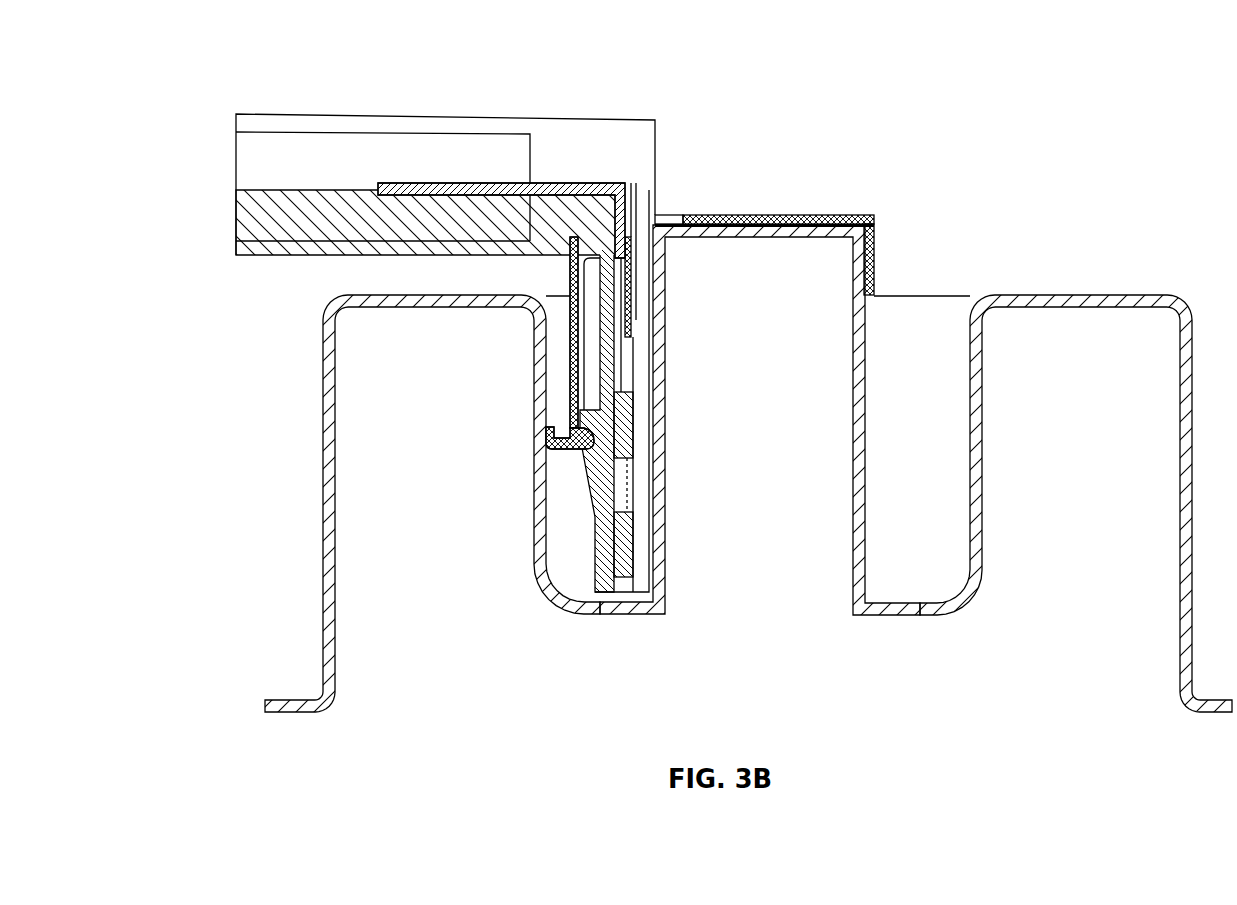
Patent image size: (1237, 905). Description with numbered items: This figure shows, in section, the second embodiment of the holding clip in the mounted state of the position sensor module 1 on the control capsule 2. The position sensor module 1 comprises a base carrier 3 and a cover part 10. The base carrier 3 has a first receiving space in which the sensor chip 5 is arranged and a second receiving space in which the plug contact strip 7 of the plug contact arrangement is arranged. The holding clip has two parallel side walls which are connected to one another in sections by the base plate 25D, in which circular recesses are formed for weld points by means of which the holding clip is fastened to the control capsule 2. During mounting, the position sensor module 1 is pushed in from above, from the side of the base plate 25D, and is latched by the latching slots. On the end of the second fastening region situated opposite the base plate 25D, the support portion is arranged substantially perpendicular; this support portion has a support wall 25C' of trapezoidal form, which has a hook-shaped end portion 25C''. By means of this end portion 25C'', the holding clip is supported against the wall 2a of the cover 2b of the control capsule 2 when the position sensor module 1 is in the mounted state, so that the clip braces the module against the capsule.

The position sensor module 1 is at (440, 301).
The base carrier 3 is at (659, 128).
The plug contact strip 7 is at (633, 189).
The cover part 10 is at (231, 204).
The sensor chip 5 is at (636, 435).
The support wall 25C' is at (527, 332).
The hook-shaped end portion 25C'' is at (523, 408).
The base plate 25D is at (764, 208).
The control capsule 2 is at (737, 445).
The wall 2a is at (333, 306).
The cover 2b is at (1079, 292).